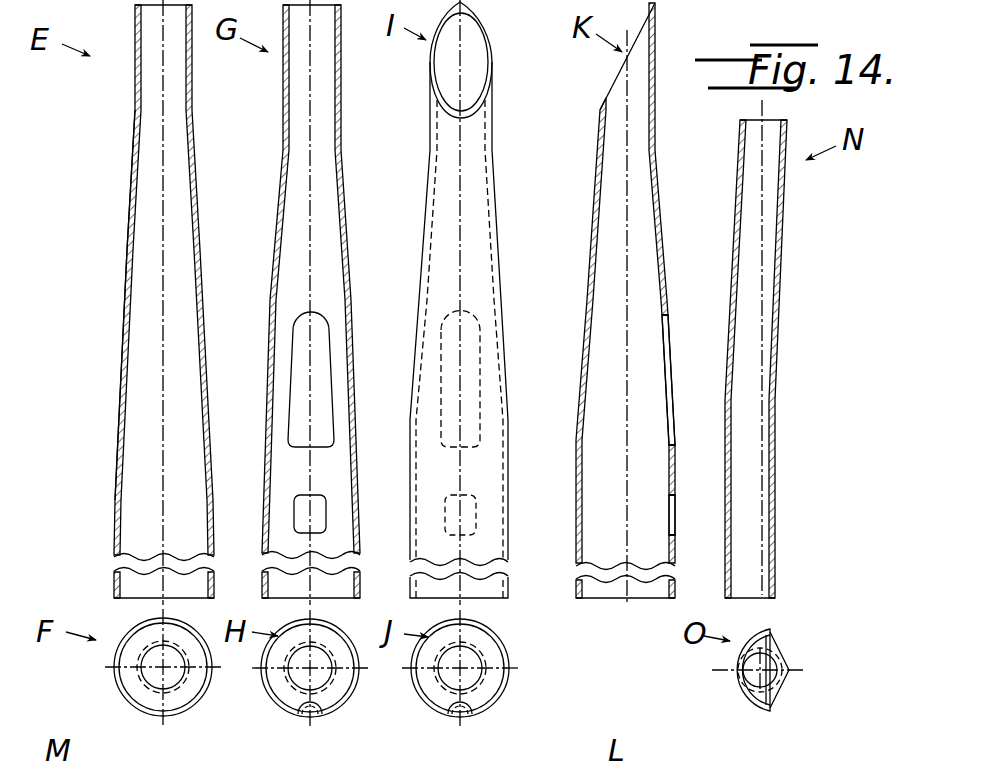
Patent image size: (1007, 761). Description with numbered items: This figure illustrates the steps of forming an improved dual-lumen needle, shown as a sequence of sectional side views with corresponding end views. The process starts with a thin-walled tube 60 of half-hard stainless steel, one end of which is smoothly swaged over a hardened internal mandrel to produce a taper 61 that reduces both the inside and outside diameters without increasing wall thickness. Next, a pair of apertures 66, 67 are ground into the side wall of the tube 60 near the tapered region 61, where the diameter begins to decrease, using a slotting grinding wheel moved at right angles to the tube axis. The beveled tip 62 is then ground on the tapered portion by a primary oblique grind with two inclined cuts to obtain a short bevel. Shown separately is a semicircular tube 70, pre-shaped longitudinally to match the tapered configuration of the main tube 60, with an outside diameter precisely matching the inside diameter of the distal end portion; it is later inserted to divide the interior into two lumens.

The thin-walled tube 60 is at (118, 484).
The taper 61 is at (124, 348).
The beveled tip 62 is at (434, 76).
The aperture 66 is at (441, 390).
The aperture 67 is at (445, 518).
The semicircular tube 70 is at (774, 398).